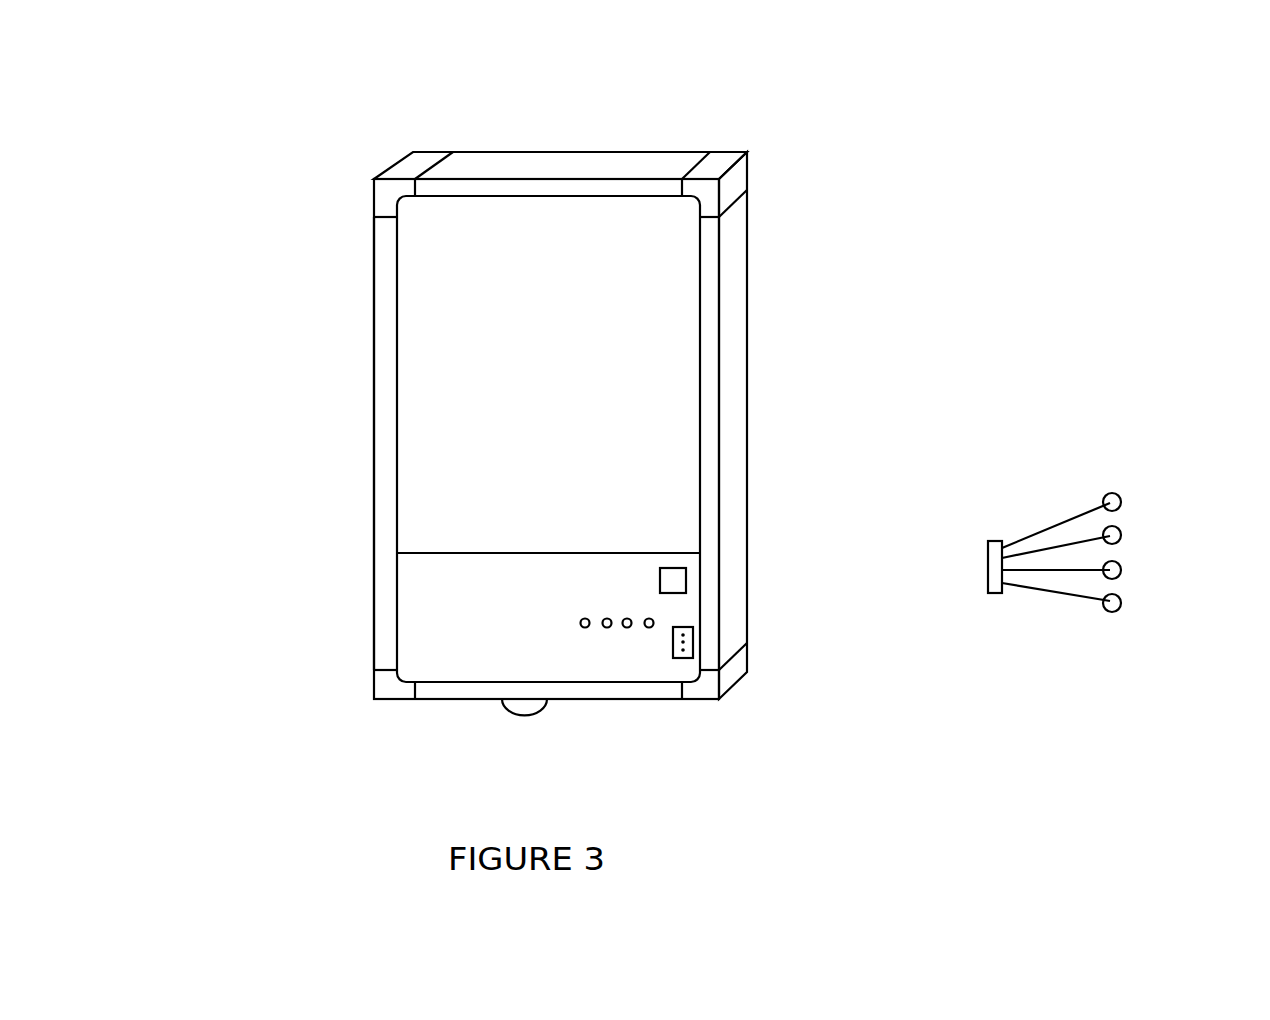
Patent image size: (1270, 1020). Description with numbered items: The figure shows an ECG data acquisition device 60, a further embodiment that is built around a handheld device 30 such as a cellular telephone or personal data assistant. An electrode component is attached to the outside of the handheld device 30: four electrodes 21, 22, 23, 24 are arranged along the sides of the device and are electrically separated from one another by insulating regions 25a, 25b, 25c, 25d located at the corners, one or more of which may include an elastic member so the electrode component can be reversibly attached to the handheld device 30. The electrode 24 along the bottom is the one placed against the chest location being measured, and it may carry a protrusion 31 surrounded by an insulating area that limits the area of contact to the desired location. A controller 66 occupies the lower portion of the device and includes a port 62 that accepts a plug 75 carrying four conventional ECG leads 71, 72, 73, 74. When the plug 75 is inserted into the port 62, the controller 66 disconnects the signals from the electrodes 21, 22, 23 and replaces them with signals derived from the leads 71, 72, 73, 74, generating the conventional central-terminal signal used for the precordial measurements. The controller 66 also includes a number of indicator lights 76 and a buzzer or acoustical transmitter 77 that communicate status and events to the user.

The ECG data acquisition device 60 is at (196, 127).
The electrode 21 is at (738, 294).
The electrode 22 is at (377, 394).
The electrode 23 is at (622, 157).
The electrode 24 is at (566, 693).
The insulating region 25a is at (398, 168).
The insulating region 25b is at (737, 177).
The insulating region 25c is at (708, 692).
The insulating region 25d is at (374, 699).
The handheld device 30 is at (567, 481).
The protrusion 31 is at (527, 706).
The port 62 is at (690, 638).
The controller 66 is at (462, 564).
The ECG lead 71 is at (1121, 501).
The ECG lead 72 is at (1121, 534).
The ECG lead 73 is at (1121, 570).
The ECG lead 74 is at (1121, 606).
The plug 75 is at (989, 596).
The indicator lights 76 is at (584, 618).
The acoustical transmitter 77 is at (672, 580).